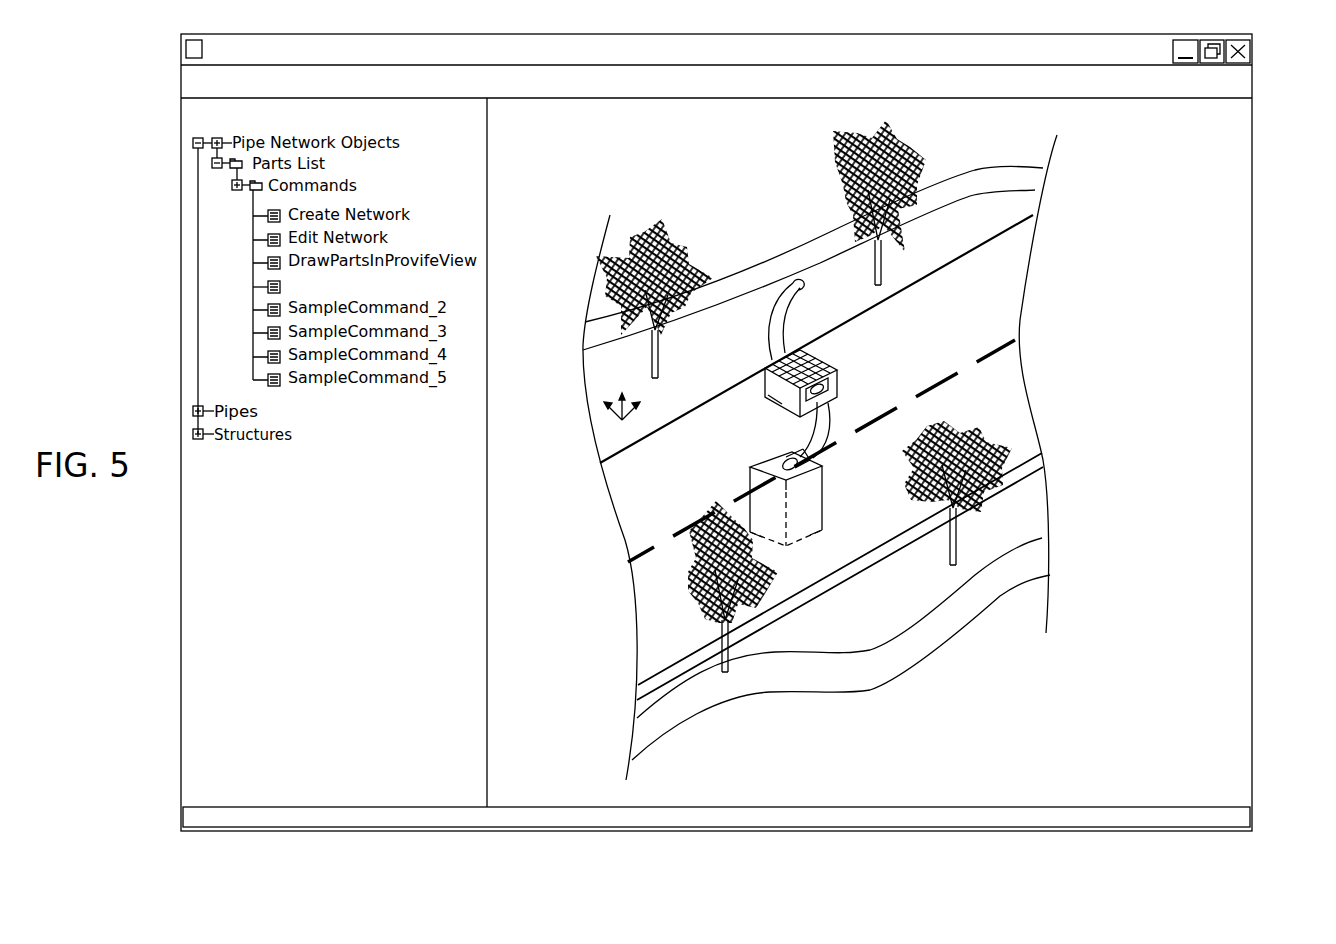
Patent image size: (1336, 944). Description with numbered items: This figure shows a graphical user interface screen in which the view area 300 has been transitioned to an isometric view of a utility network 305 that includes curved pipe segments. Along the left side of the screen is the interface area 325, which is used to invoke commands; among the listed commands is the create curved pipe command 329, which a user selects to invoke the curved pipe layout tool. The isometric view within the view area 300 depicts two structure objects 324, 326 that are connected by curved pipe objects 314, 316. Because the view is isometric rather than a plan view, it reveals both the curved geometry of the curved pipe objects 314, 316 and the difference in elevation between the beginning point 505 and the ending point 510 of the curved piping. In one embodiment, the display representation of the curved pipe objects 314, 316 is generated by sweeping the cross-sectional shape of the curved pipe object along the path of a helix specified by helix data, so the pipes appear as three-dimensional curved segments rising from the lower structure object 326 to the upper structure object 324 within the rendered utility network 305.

The view area 300 is at (1253, 191).
The interface area 325 is at (181, 46).
The create curved pipe command 329 is at (266, 284).
The utility network 305 is at (740, 208).
The curved pipe object 314 is at (766, 330).
The structure object 324 is at (838, 372).
The ending point 510 is at (829, 388).
The beginning point 505 is at (784, 455).
The curved pipe object 316 is at (835, 435).
The structure object 326 is at (821, 496).